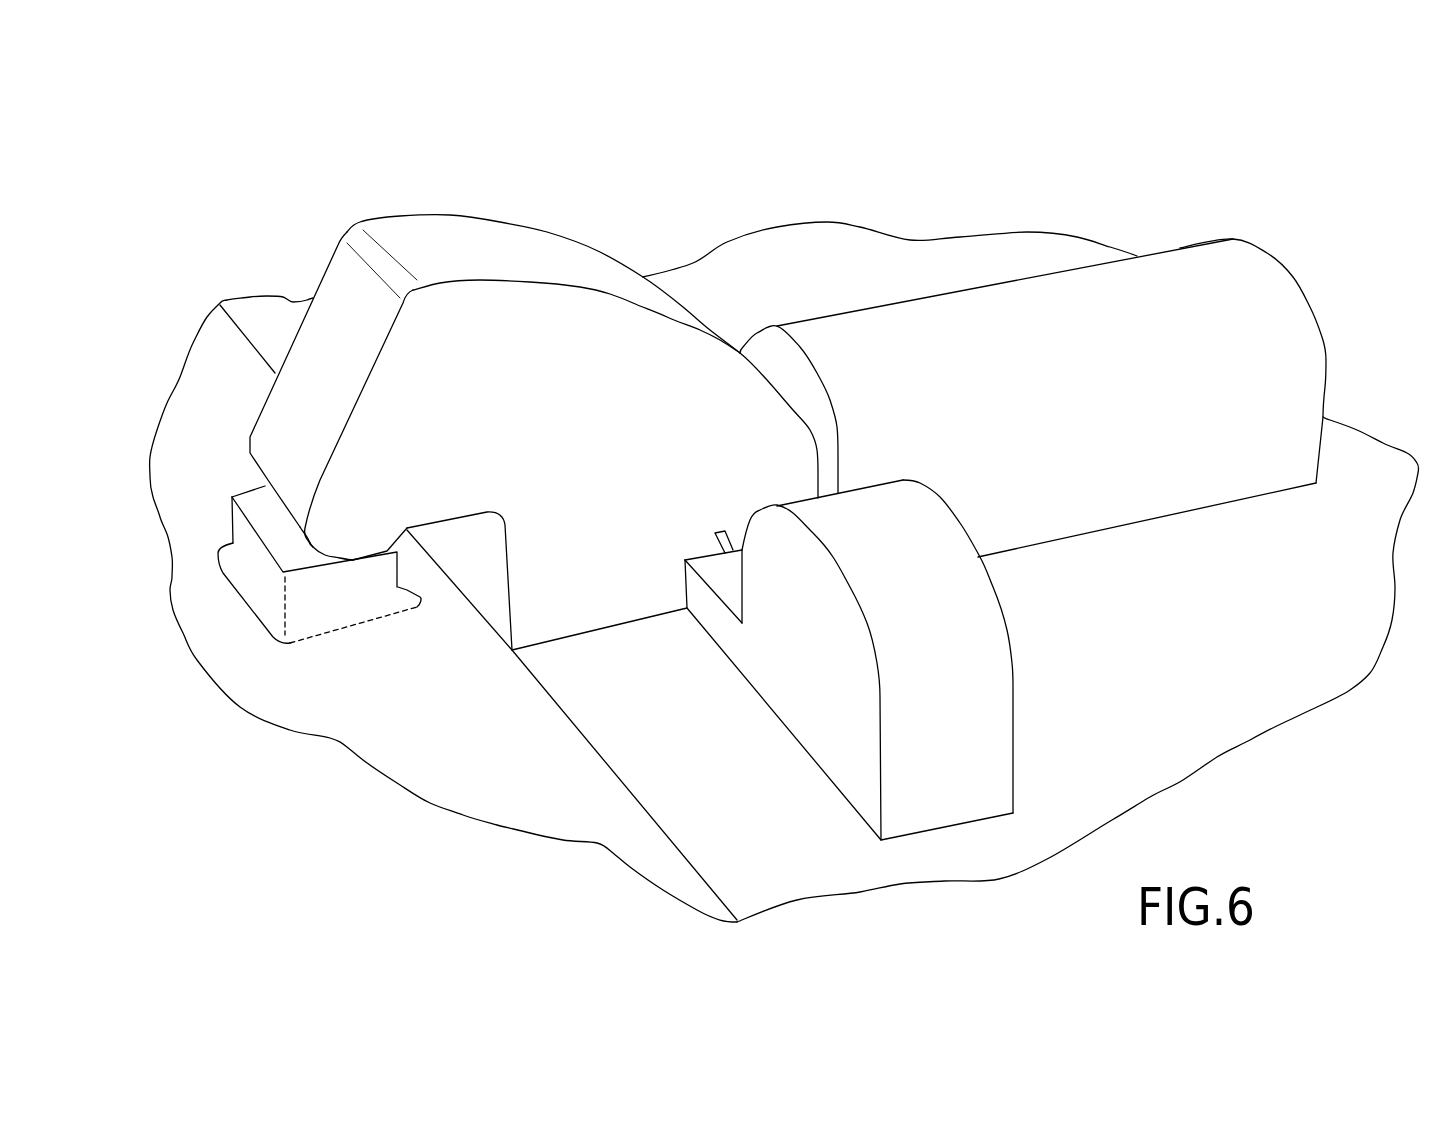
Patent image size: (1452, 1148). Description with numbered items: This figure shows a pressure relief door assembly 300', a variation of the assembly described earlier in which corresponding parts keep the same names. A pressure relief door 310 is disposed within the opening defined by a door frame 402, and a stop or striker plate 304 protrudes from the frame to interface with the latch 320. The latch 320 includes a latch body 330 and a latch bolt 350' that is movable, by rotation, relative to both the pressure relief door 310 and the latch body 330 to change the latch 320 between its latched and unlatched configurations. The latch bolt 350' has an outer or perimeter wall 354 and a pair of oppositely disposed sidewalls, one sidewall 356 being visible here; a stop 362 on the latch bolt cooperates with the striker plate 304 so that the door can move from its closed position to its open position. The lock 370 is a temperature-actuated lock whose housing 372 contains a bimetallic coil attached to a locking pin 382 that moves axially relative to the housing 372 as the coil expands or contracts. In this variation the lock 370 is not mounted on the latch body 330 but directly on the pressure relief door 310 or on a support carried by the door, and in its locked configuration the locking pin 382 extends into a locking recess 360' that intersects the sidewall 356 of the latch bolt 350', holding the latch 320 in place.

The pressure relief door assembly 300' is at (784, 496).
The striker plate 304 is at (327, 600).
The pressure relief door 310 is at (1173, 720).
The latch 320 is at (802, 257).
The latch body 330 is at (1015, 396).
The latch bolt 350' is at (534, 387).
The perimeter wall 354 is at (449, 237).
The sidewall 356 is at (542, 396).
The locking recess 360' is at (560, 579).
The stop 362 is at (357, 553).
The lock 370 is at (1066, 625).
The housing 372 is at (777, 661).
The locking pin 382 is at (718, 532).
The door frame 402 is at (481, 778).